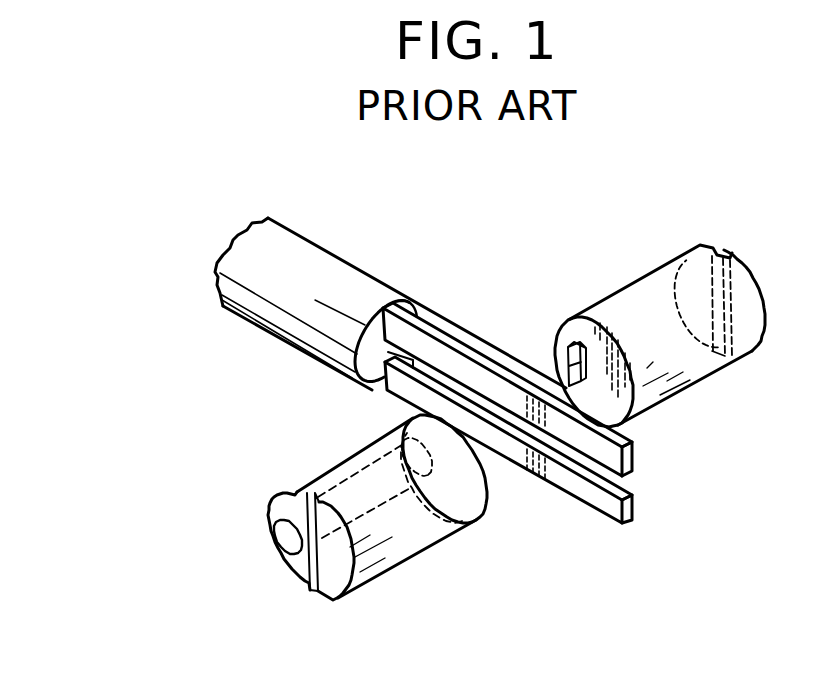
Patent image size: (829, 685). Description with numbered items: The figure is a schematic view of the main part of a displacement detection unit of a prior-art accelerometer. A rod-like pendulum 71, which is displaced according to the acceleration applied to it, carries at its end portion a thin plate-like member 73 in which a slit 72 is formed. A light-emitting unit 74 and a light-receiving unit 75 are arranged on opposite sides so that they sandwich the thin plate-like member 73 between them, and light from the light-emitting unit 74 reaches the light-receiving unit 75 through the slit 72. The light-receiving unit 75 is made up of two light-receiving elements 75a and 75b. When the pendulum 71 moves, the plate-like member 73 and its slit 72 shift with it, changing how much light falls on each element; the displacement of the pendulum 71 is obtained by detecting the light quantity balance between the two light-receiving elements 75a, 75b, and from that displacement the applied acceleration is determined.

The rod-like pendulum 71 is at (341, 278).
The slit 72 is at (621, 481).
The thin plate-like member 73 is at (562, 481).
The light-emitting unit 74 is at (395, 433).
The light-receiving unit 75 is at (583, 240).
The light-receiving element 75a is at (560, 368).
The light-receiving element 75b is at (568, 347).